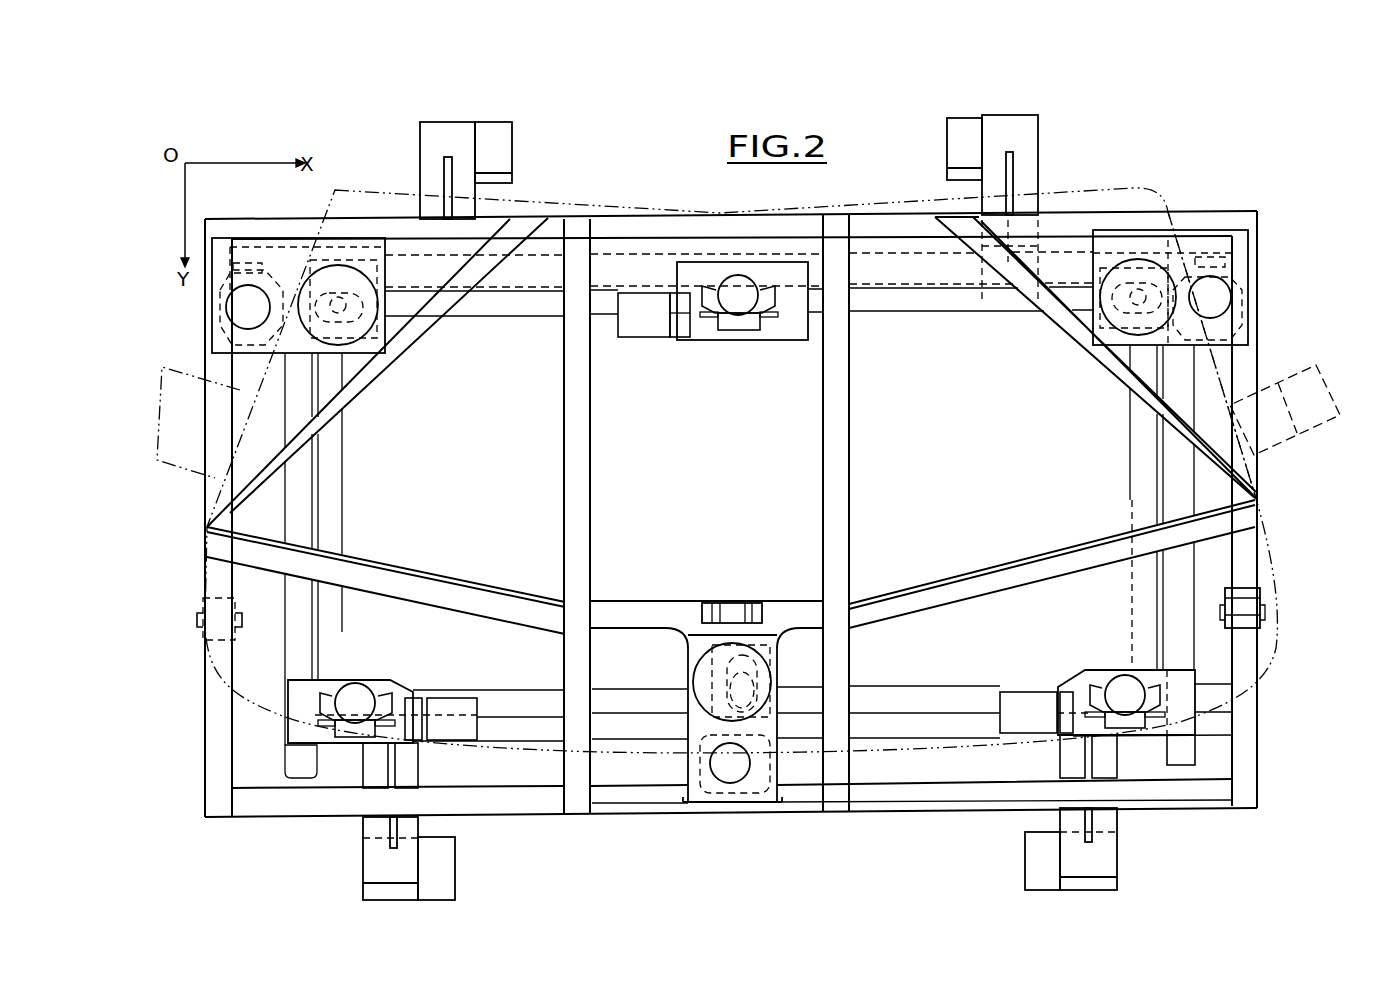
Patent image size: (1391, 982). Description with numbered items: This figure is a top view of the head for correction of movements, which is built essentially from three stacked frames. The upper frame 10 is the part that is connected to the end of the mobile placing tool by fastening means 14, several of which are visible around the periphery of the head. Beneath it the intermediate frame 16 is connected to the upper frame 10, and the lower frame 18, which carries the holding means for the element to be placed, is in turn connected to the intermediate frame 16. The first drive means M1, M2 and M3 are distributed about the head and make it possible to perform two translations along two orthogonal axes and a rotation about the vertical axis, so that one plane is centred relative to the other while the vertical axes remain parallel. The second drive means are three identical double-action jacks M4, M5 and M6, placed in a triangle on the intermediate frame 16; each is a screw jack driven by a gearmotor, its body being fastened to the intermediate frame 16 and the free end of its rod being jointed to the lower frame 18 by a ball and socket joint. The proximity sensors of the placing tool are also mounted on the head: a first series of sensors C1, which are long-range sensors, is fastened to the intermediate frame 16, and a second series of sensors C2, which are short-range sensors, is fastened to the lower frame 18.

The upper frame 10 is at (1245, 737).
The fastening means 14 is at (243, 622).
The intermediate frame 16 is at (1177, 573).
The lower frame 18 is at (916, 701).
The first drive means M1 is at (353, 264).
The first drive means M2 is at (1166, 258).
The first drive means M3 is at (778, 698).
The double-action jack M4 is at (355, 690).
The double-action jack M5 is at (1131, 690).
The double-action jack M6 is at (750, 273).
The first series of sensors C1 is at (1323, 382).
The second series of sensors C2 is at (1038, 157).